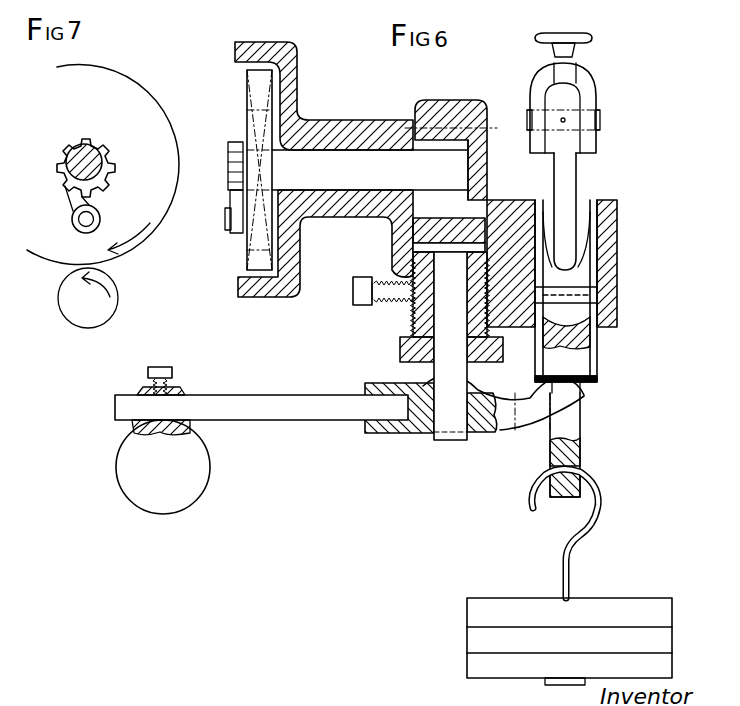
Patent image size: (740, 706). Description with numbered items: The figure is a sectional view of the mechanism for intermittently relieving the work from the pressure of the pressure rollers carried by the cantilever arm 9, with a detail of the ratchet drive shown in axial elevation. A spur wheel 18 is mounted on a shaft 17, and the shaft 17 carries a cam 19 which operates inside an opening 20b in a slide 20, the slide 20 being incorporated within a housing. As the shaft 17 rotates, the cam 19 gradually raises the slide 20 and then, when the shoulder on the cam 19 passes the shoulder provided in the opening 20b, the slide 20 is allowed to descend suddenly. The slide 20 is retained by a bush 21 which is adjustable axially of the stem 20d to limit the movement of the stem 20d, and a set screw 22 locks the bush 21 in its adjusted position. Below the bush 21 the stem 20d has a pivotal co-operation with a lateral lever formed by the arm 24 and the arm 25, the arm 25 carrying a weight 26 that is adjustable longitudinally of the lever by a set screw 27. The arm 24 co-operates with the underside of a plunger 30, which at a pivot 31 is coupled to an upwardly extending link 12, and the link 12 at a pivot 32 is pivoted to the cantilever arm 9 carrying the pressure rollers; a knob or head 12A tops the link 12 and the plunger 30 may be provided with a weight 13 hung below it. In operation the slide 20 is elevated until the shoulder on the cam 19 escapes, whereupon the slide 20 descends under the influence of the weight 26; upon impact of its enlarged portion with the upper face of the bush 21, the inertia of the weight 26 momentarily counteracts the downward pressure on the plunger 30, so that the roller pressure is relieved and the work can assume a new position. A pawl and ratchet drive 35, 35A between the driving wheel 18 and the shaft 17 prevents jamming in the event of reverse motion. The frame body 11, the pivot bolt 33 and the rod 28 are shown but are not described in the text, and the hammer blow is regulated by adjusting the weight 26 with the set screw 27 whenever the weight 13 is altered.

In FIG. 6, the cantilever arm 9 is at (598, 90).
In FIG. 6, the frame body 11 is at (390, 241).
In FIG. 6, the link 12 is at (577, 181).
In FIG. 6, the knob head of plunger rod 12A is at (570, 60).
In FIG. 6, the weight 13 is at (614, 593).
In FIG. 6, the shaft 17 is at (370, 170).
In FIG. 6, the spur wheel 18 is at (247, 258).
In FIG. 6, the cam 19 is at (462, 145).
In FIG. 6, the slide 20 is at (449, 225).
In FIG. 6, the opening in the slide 20b is at (467, 167).
In FIG. 6, the stem 20d is at (445, 327).
In FIG. 6, the bush 21 is at (400, 350).
In FIG. 6, the set screw 22 is at (353, 290).
In FIG. 6, the arm of the lever 24 is at (496, 434).
In FIG. 6, the lever arm 25 is at (243, 396).
In FIG. 6, the weight 26 is at (214, 456).
In FIG. 6, the set screw 27 is at (163, 367).
In FIG. 6, the rod 28 is at (583, 390).
In FIG. 6, the plunger 30 is at (590, 337).
In FIG. 6, the pivotal coupling 31 is at (593, 296).
In FIG. 6, the pivot 32 is at (600, 120).
In FIG. 6, the pivot bolt 33 is at (450, 346).
In FIG. 7, the pawl and ratchet drive 35 is at (108, 208).
In FIG. 6, the pawl and ratchet drive 35 is at (228, 223).
In FIG. 7, the pawl and ratchet drive element 35A is at (113, 151).